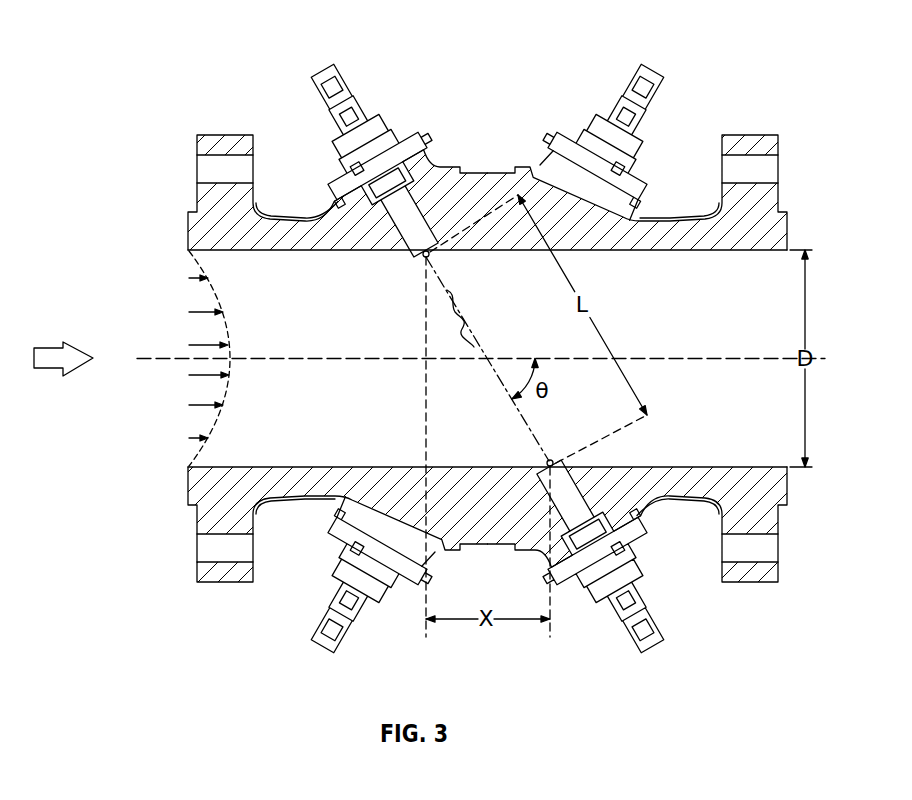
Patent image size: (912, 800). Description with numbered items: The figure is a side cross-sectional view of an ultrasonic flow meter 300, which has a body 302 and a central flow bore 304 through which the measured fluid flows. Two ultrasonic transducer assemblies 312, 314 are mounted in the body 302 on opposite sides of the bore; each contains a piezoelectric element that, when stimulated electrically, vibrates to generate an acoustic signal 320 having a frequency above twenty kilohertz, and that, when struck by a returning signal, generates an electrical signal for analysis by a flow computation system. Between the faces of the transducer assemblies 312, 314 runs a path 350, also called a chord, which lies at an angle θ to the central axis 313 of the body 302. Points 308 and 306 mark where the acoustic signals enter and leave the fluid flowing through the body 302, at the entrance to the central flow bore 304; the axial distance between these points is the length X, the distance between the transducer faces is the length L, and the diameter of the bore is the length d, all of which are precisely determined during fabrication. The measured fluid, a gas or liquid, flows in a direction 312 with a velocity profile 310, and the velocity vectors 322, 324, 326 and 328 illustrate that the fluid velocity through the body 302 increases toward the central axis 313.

The ultrasonic flow meter 300 is at (228, 53).
The body 302 is at (484, 167).
The central flow bore 304 is at (690, 304).
The point 306 is at (431, 256).
The point 308 is at (551, 460).
The velocity profile 310 is at (199, 260).
The ultrasonic transducer assembly 312 is at (657, 608).
The central axis 313 is at (137, 357).
The ultrasonic transducer assembly 314 is at (382, 120).
The acoustic signal 320 is at (463, 308).
The velocity vector 322 is at (200, 311).
The velocity vector 324 is at (200, 344).
The velocity vector 326 is at (200, 377).
The velocity vector 328 is at (200, 406).
The path (chord) 350 is at (497, 373).